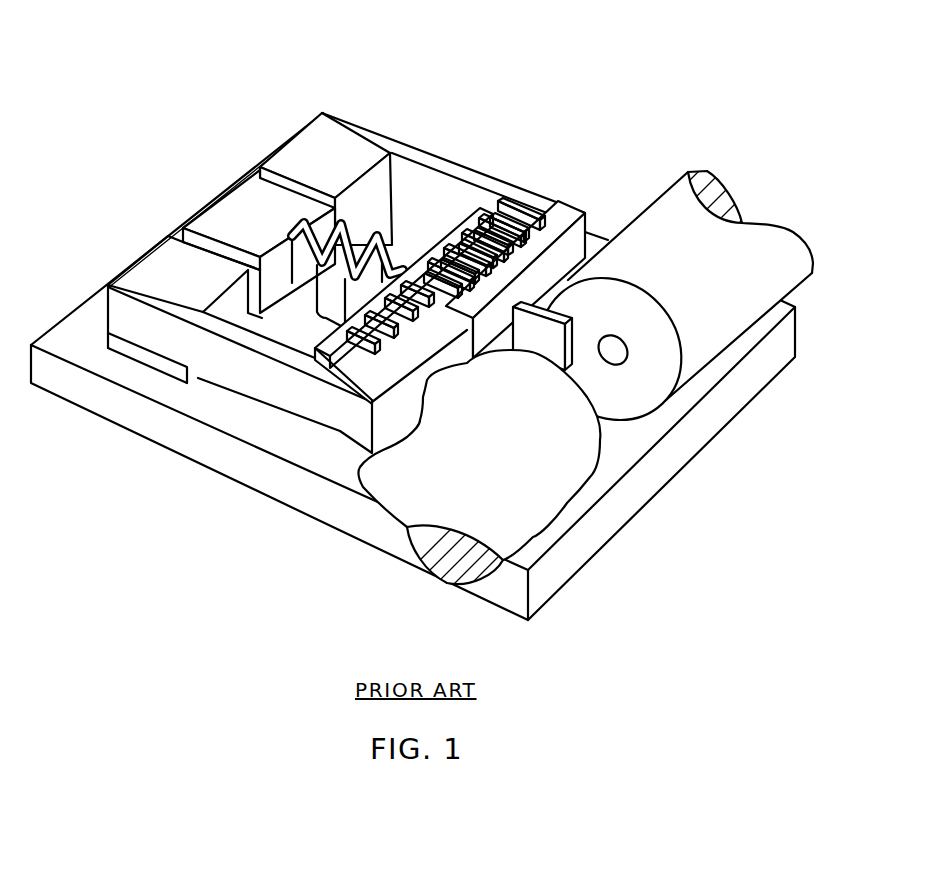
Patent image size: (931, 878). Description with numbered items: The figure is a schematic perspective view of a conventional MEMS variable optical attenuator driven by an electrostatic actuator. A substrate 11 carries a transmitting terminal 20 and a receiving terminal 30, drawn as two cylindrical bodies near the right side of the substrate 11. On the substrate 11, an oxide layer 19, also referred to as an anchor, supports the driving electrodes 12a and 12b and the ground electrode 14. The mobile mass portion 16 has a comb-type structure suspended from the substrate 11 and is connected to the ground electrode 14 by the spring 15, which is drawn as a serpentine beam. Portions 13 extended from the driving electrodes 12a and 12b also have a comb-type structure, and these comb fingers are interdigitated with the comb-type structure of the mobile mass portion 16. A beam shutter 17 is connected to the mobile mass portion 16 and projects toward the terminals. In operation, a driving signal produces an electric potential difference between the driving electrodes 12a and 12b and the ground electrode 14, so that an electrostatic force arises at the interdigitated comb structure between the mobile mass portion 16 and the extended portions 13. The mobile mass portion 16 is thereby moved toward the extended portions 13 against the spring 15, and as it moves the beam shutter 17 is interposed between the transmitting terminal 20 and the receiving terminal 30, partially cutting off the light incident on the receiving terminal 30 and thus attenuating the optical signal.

The substrate 11 is at (110, 412).
The driving electrode 12a is at (167, 262).
The driving electrode 12b is at (315, 150).
The extended portion 13 is at (397, 370).
The ground electrode 14 is at (238, 205).
The spring 15 is at (322, 300).
The mobile mass portion 16 is at (480, 213).
The beam shutter 17 is at (553, 343).
The oxide layer 19 is at (273, 310).
The transmitting terminal 20 is at (555, 500).
The receiving terminal 30 is at (740, 340).